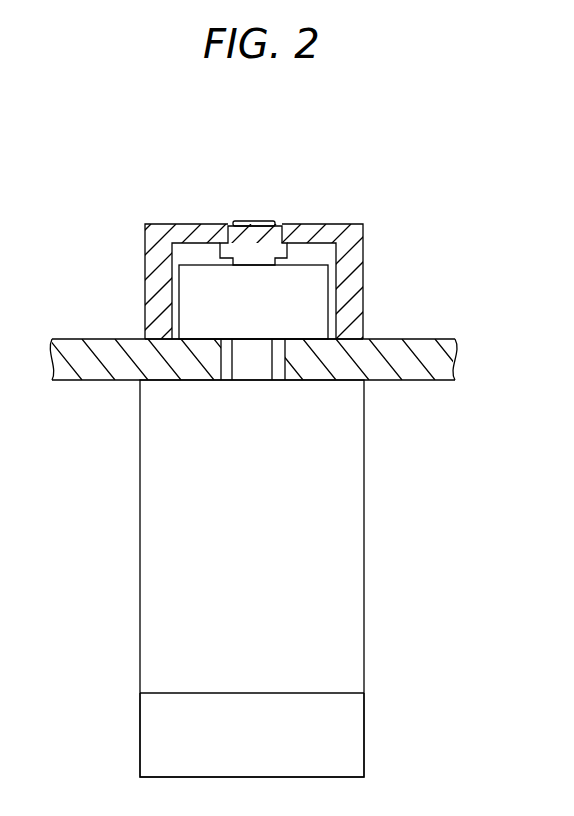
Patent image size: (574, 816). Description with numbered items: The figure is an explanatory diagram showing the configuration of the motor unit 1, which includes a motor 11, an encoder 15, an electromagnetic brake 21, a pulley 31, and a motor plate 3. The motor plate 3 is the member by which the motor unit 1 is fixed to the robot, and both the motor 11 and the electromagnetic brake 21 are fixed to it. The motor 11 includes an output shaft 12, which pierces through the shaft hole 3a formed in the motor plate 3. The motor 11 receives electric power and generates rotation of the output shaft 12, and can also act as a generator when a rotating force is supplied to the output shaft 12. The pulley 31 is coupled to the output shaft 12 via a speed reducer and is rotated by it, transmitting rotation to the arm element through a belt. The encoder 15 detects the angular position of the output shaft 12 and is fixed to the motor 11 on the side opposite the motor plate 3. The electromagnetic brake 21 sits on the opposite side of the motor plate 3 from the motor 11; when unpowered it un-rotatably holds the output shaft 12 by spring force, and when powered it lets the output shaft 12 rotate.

The motor unit 1 is at (102, 180).
The motor plate 3 is at (432, 362).
The shaft hole 3a is at (278, 369).
The motor 11 is at (357, 558).
The output shaft 12 is at (245, 369).
The encoder 15 is at (355, 728).
The electromagnetic brake 21 is at (312, 307).
The pulley 31 is at (355, 270).